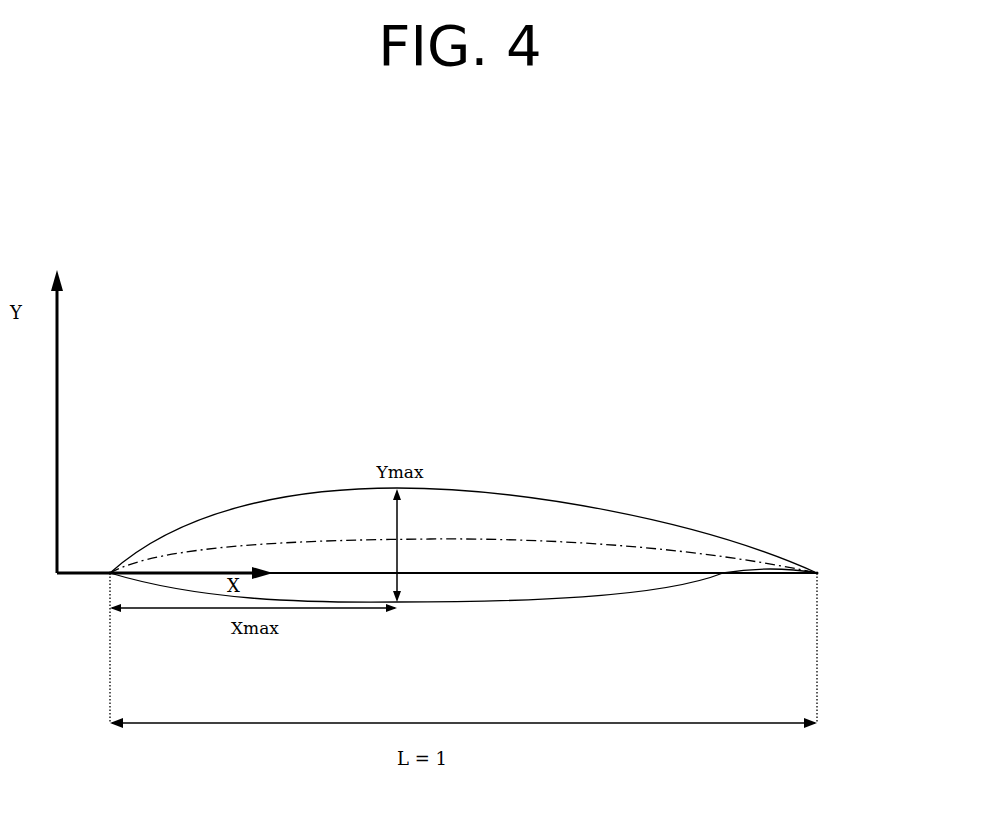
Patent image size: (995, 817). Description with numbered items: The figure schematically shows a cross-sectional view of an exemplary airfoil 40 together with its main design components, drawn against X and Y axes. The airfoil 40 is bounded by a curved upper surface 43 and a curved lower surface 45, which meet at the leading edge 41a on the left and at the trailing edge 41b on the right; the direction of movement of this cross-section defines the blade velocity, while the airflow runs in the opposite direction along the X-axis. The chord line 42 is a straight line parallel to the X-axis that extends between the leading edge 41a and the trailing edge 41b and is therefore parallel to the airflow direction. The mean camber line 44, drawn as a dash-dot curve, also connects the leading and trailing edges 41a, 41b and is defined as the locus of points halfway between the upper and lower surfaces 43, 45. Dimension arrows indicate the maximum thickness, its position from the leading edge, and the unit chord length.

The airfoil 40 is at (677, 367).
The leading edge 41a is at (110, 571).
The trailing edge 41b is at (817, 572).
The chord line 42 is at (522, 579).
The upper surface 43 is at (305, 486).
The mean camber line 44 is at (620, 540).
The lower surface 45 is at (597, 602).